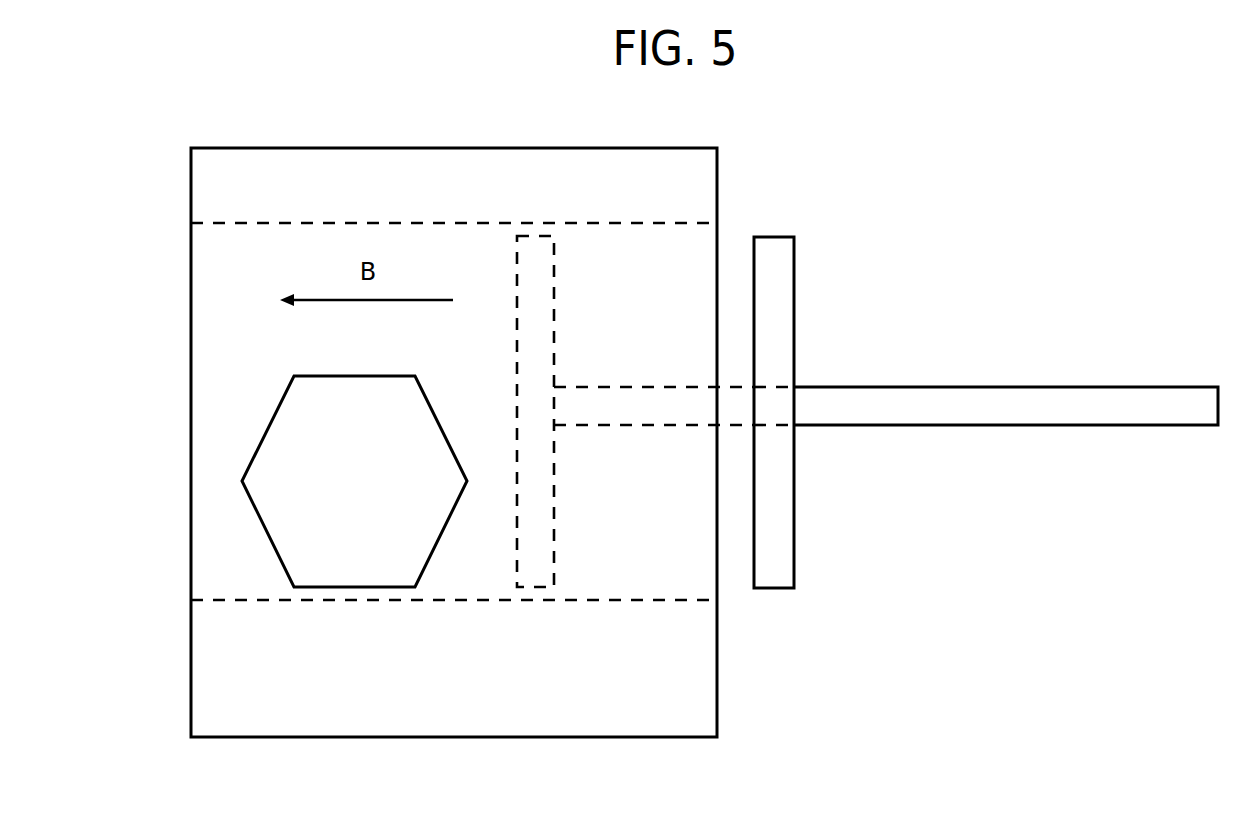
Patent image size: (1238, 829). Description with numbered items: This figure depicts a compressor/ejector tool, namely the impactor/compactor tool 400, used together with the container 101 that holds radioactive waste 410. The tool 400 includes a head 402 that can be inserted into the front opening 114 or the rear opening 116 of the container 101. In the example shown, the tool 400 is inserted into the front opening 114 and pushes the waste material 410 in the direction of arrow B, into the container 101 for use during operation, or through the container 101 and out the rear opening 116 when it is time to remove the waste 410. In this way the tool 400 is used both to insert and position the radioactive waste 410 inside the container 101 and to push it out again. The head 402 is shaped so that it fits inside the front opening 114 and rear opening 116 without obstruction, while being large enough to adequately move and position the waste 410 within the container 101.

The container 101 is at (323, 148).
The rear opening 116 is at (191, 373).
The front opening 114 is at (717, 553).
The radioactive waste 410 is at (354, 481).
The head 402 is at (773, 262).
The impactor/compactor tool 400 is at (921, 333).